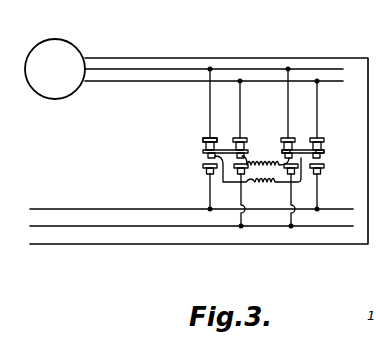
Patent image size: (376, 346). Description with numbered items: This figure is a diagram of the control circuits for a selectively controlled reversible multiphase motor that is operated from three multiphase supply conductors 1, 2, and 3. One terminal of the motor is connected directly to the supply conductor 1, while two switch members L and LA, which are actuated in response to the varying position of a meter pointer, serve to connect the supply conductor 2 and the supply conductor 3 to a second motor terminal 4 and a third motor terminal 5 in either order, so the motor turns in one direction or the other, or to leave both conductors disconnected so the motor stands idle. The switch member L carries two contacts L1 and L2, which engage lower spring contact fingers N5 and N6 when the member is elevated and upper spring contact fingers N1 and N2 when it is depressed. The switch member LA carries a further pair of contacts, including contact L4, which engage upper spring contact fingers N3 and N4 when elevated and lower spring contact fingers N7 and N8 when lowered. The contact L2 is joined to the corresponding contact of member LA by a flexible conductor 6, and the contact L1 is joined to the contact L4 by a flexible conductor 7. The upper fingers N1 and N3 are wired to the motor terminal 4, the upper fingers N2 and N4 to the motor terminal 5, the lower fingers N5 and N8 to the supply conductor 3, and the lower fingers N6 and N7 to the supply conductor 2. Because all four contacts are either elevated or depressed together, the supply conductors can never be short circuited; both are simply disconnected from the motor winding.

The supply conductor 1 is at (118, 57).
The supply conductor 2 is at (78, 227).
The supply conductor 3 is at (103, 210).
The motor terminal 4 is at (106, 83).
The motor terminal 5 is at (130, 71).
The flexible conductor 6 is at (262, 163).
The flexible conductor 7 is at (256, 184).
The upper spring contact finger N1 is at (318, 138).
The upper spring contact finger N2 is at (289, 138).
The spring contact finger N3 is at (238, 138).
The spring contact finger N4 is at (206, 138).
The lower spring contact finger N5 is at (322, 168).
The lower spring contact finger N6 is at (292, 176).
The lower spring contact finger N7 is at (233, 170).
The lower spring contact finger N8 is at (203, 168).
The switch member L is at (325, 152).
The switch member LA is at (203, 152).
The contact L1 is at (325, 150).
The contact L2 is at (282, 150).
The contact L4 is at (203, 144).